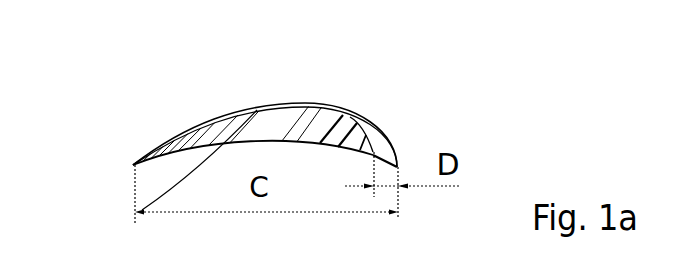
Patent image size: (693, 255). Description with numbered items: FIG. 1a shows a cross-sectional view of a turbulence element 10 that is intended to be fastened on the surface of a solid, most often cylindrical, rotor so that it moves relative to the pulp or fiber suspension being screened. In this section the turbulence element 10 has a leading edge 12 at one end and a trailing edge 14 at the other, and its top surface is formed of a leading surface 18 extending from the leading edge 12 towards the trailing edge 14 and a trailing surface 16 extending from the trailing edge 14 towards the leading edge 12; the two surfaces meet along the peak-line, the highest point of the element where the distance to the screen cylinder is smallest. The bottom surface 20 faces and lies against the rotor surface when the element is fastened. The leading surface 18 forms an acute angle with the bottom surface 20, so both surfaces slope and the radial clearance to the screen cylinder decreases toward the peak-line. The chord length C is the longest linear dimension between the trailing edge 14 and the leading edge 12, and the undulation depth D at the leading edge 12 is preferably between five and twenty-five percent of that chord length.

The turbulence element 10 is at (168, 123).
The leading edge 12 is at (401, 163).
The trailing edge 14 is at (133, 165).
The trailing surface 16 is at (205, 122).
The leading surface 18 is at (378, 128).
The bottom surface 20 is at (142, 210).